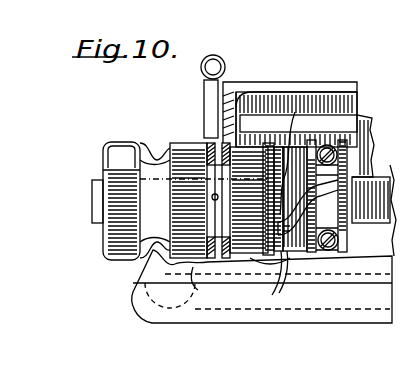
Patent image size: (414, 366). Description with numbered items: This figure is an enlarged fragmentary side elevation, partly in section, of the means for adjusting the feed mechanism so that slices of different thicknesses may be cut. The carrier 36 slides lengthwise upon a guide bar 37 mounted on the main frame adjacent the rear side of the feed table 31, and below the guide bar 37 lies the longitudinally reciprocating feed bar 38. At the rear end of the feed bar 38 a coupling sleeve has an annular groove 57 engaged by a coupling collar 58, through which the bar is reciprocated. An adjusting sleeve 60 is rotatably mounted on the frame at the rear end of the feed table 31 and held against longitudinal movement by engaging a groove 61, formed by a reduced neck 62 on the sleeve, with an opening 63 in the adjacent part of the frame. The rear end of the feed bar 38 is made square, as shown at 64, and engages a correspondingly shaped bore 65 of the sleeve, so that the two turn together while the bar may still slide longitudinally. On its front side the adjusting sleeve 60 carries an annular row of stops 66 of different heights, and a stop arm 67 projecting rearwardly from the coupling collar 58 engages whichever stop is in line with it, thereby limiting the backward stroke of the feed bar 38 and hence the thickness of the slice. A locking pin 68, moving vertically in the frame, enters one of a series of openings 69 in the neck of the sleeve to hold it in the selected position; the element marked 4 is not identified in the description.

The pivot pin 4 is at (211, 197).
The feed table 31 is at (386, 273).
The carrier 36 is at (290, 114).
The guide bar 37 is at (356, 116).
The feed bar 38 is at (378, 179).
The annular groove 57 is at (346, 164).
The coupling collar 58 is at (343, 234).
The adjusting sleeve 60 is at (168, 157).
The groove 61 is at (204, 147).
The reduced neck 62 is at (171, 194).
The opening 63 is at (196, 268).
The square rear end 64 is at (97, 225).
The bore 65 is at (148, 160).
The stops 66 is at (281, 207).
The stop arm 67 is at (304, 212).
The locking pin 68 is at (205, 128).
The openings 69 is at (218, 197).